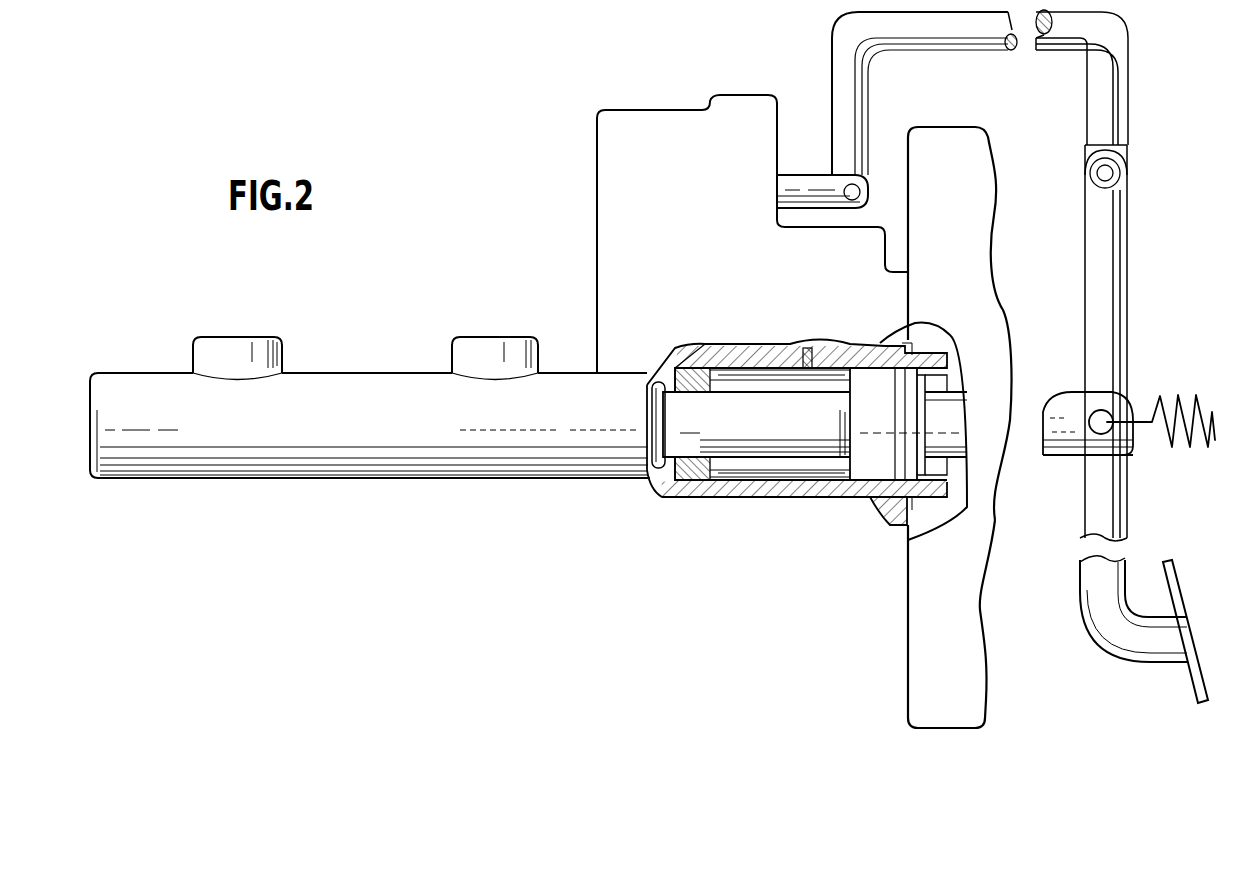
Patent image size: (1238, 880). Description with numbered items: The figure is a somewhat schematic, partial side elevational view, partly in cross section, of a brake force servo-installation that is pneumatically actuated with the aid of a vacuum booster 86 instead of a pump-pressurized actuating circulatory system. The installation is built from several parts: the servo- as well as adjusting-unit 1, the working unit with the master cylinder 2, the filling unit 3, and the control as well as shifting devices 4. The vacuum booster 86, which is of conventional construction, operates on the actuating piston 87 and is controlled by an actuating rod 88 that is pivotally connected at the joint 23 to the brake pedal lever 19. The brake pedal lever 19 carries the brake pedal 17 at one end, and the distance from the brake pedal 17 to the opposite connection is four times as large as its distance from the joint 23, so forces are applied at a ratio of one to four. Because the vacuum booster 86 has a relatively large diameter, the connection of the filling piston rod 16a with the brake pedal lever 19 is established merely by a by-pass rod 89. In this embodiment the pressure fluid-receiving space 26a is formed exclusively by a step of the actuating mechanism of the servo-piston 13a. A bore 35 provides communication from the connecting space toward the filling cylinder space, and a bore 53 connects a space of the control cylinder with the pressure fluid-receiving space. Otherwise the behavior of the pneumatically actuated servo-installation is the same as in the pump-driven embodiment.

The servo- as well as adjusting-unit 1 is at (706, 498).
The working unit with the master cylinder 2 is at (347, 480).
The filling unit 3 is at (592, 229).
The control as well as shifting devices 4 is at (912, 300).
The servo-piston 13a is at (804, 416).
The filling piston rod 16a is at (806, 190).
The brake pedal 17 is at (1193, 642).
The brake pedal lever 19 is at (1131, 285).
The joint 23 is at (1092, 412).
The pressure fluid-receiving space 26a is at (765, 482).
The bore 35 is at (672, 356).
The bore 53 is at (806, 347).
The vacuum booster 86 is at (906, 640).
The actuating piston 87 is at (960, 410).
The actuating rod 88 is at (1078, 456).
The by-pass rod 89 is at (1034, 44).